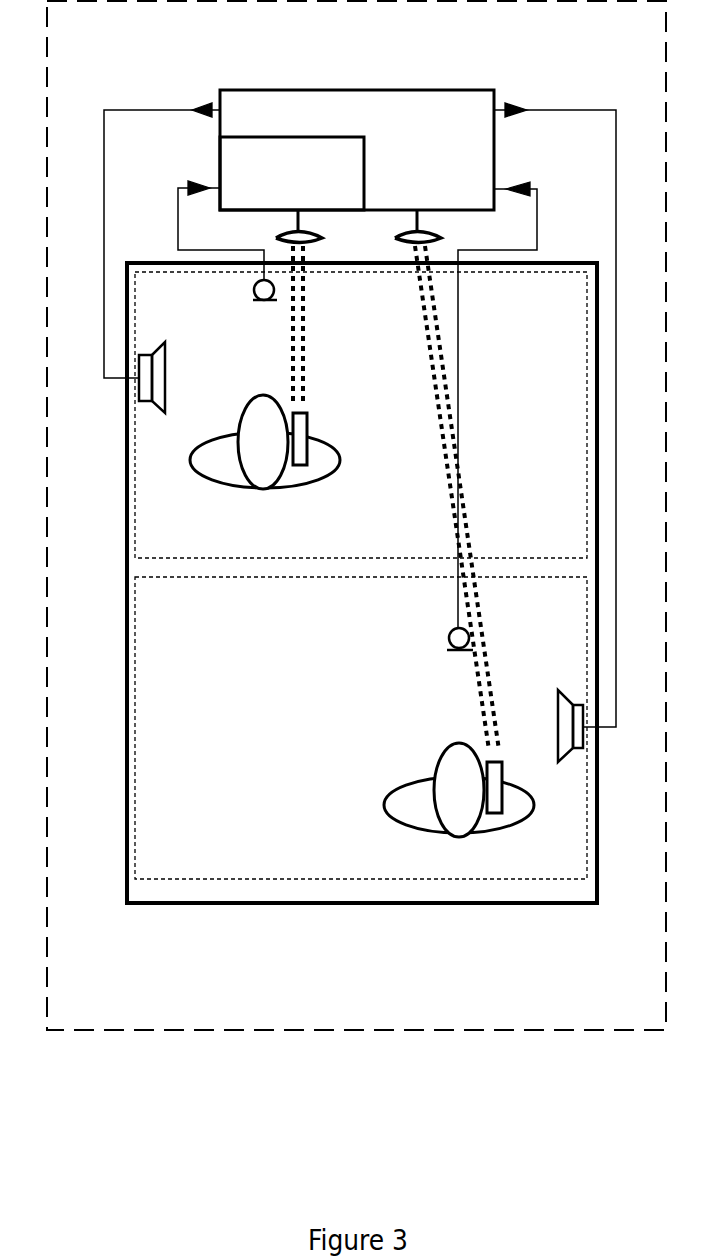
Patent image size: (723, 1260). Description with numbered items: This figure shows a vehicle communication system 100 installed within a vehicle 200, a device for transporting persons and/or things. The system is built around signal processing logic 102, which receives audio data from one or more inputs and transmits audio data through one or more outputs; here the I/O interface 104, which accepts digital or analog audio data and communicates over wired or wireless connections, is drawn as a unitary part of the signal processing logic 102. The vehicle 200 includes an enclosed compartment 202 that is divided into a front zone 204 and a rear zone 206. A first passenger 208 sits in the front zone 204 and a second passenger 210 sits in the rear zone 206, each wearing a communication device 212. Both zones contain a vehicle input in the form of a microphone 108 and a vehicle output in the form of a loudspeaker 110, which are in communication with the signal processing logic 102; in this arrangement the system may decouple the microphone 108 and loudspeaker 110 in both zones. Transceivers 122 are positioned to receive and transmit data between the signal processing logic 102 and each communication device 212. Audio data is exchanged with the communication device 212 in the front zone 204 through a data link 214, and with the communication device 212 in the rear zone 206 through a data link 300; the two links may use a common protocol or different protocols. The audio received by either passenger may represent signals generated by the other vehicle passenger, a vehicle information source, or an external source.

The vehicle communication system 100 is at (136, 52).
The signal processing logic 102 is at (458, 88).
The I/O interface 104 is at (283, 203).
The microphone 108 is at (250, 317).
The loudspeaker 110 is at (167, 445).
The transceivers 122 is at (358, 255).
The vehicle 200 is at (103, 1011).
The enclosed compartment 202 is at (173, 915).
The front zone 204 is at (553, 538).
The rear zone 206 is at (188, 860).
The first passenger 208 is at (305, 491).
The second passenger 210 is at (420, 777).
The communication device 212 is at (308, 418).
The data link 214 is at (305, 320).
The data link 300 is at (431, 370).